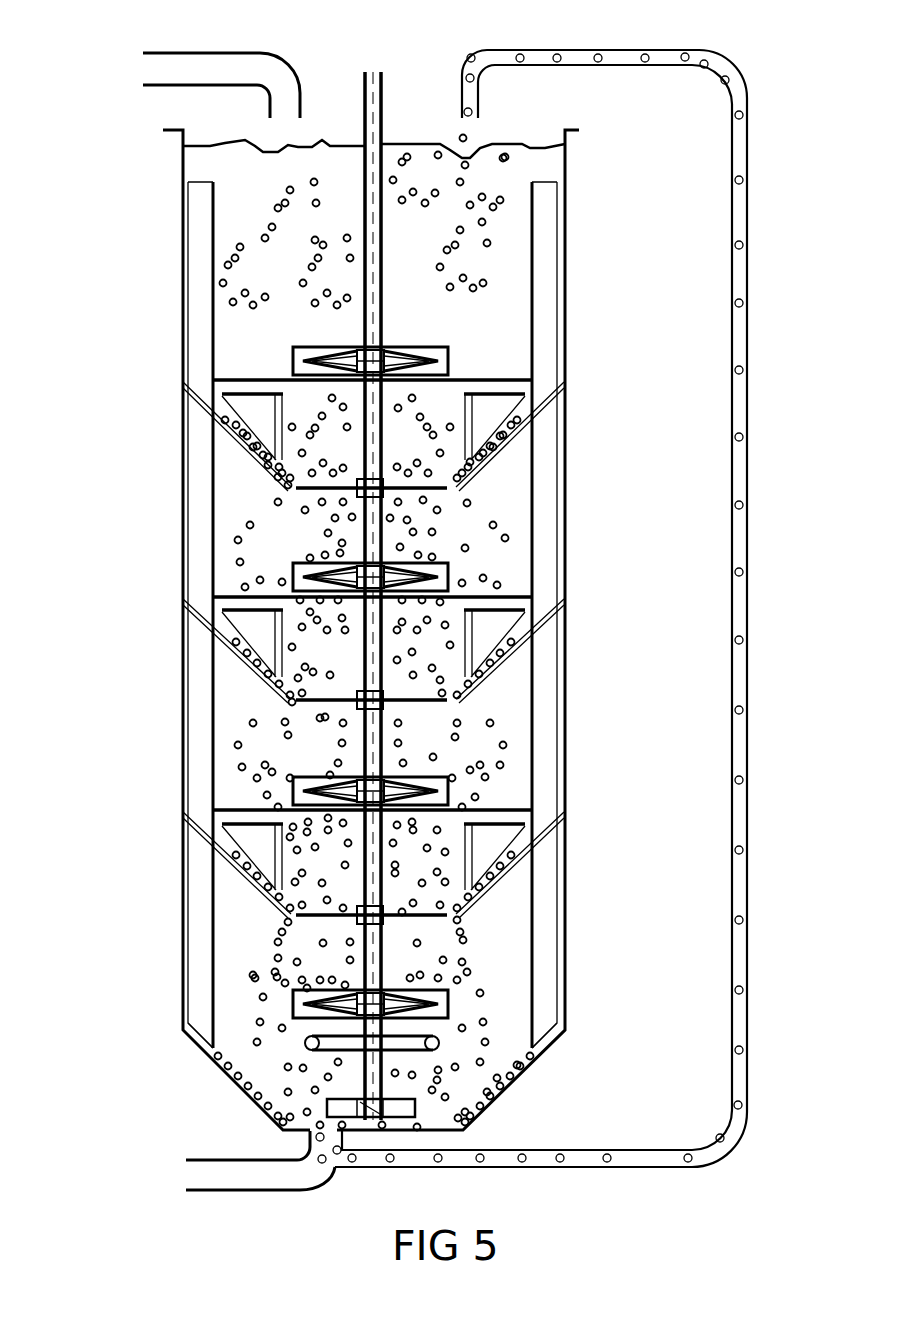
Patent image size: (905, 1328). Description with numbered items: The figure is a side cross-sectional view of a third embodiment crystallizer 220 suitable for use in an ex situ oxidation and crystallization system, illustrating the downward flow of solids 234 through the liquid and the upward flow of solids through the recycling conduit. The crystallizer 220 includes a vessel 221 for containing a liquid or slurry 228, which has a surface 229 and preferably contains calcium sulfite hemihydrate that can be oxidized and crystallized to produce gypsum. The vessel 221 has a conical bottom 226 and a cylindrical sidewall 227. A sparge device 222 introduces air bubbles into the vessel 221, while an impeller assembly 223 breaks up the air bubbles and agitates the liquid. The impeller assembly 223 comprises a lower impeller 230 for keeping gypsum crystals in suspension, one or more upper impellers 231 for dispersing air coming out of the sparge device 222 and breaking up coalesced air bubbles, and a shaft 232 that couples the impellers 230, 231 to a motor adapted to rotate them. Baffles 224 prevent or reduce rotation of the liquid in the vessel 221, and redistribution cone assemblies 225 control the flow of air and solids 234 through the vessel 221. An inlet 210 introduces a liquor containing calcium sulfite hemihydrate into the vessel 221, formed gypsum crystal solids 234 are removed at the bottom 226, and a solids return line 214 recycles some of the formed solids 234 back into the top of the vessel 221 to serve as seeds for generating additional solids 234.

The inlet 210 is at (296, 81).
The solids return line 214 is at (750, 600).
The third embodiment crystallizer 220 is at (257, 20).
The vessel 221 is at (570, 186).
The sparge device 222 is at (307, 1037).
The impeller assembly 223 is at (292, 536).
The baffles 224 is at (543, 337).
The redistribution cone assemblies 225 is at (540, 450).
The conical bottom 226 is at (509, 1070).
The cylindrical sidewall 227 is at (558, 250).
The liquid or slurry 228 is at (502, 341).
The surface 229 is at (504, 141).
The lower impeller 230 is at (327, 1103).
The upper impellers 231 is at (450, 566).
The shaft 232 is at (384, 78).
The solids 234 is at (312, 262).